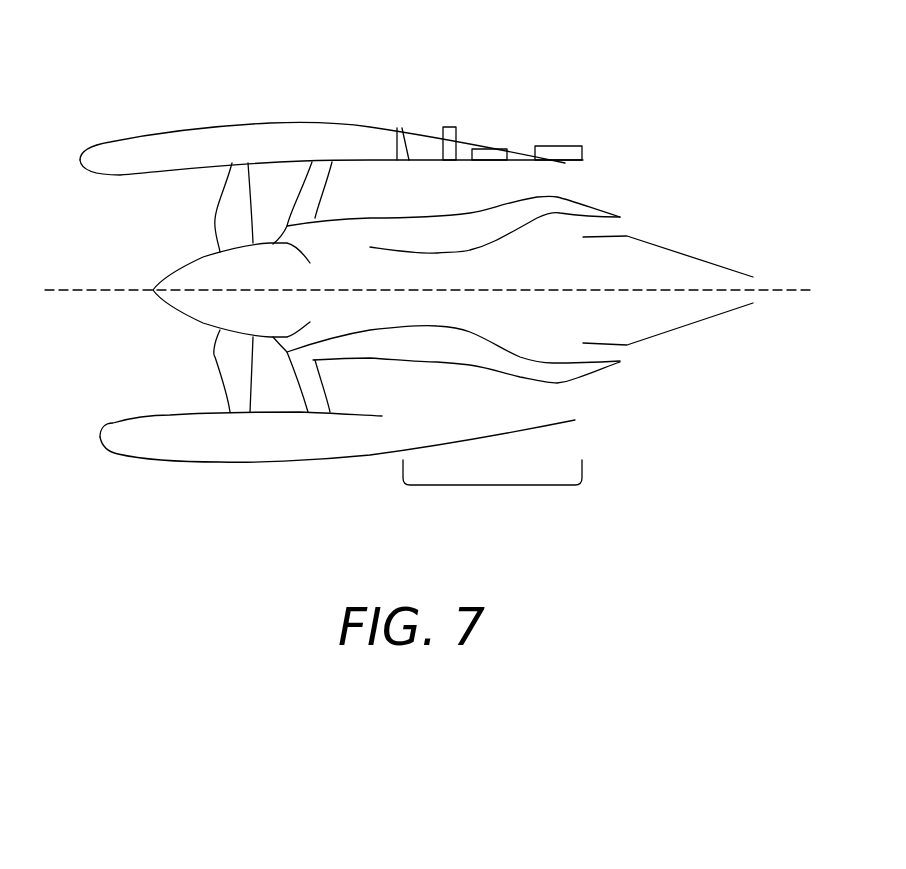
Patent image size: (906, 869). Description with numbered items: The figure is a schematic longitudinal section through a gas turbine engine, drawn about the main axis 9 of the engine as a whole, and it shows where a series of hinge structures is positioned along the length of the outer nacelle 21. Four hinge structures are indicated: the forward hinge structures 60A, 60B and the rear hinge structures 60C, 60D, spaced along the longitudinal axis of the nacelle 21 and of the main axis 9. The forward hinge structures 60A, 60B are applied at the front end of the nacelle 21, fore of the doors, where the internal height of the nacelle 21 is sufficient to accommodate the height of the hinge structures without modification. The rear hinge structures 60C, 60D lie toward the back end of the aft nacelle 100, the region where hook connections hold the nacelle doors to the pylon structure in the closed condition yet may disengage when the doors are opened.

The main axis 9 is at (80, 290).
The outer nacelle 21 is at (233, 137).
The hinge structure 60A is at (397, 128).
The hinge structure 60B is at (450, 143).
The hinge structure 60C is at (487, 155).
The hinge structure 60D is at (543, 150).
The aft nacelle 100 is at (492, 485).